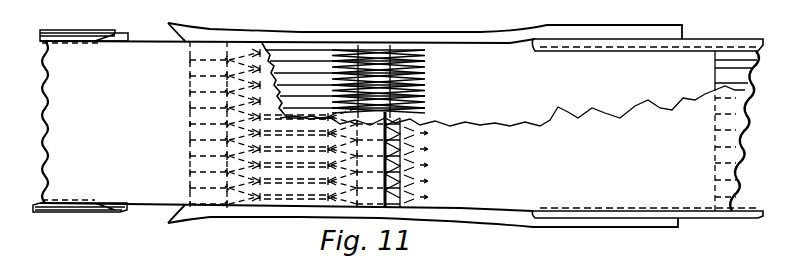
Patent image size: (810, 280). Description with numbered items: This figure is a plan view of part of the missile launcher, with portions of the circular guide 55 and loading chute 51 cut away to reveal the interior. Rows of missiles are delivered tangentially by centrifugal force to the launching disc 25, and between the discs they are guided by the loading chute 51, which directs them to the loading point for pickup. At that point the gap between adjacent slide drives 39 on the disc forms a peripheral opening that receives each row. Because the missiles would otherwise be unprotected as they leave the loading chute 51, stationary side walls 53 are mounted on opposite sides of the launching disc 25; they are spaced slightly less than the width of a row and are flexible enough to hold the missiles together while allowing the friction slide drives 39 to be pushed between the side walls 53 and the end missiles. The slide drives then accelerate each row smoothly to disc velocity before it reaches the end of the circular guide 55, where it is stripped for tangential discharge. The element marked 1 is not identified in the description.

The thread / screw element 1 is at (375, 52).
The launching disc 25 is at (533, 93).
The slide drives 39 is at (99, 35).
The loading chute 51 is at (119, 113).
The side walls 53 is at (510, 38).
The circular guide 55 is at (595, 172).